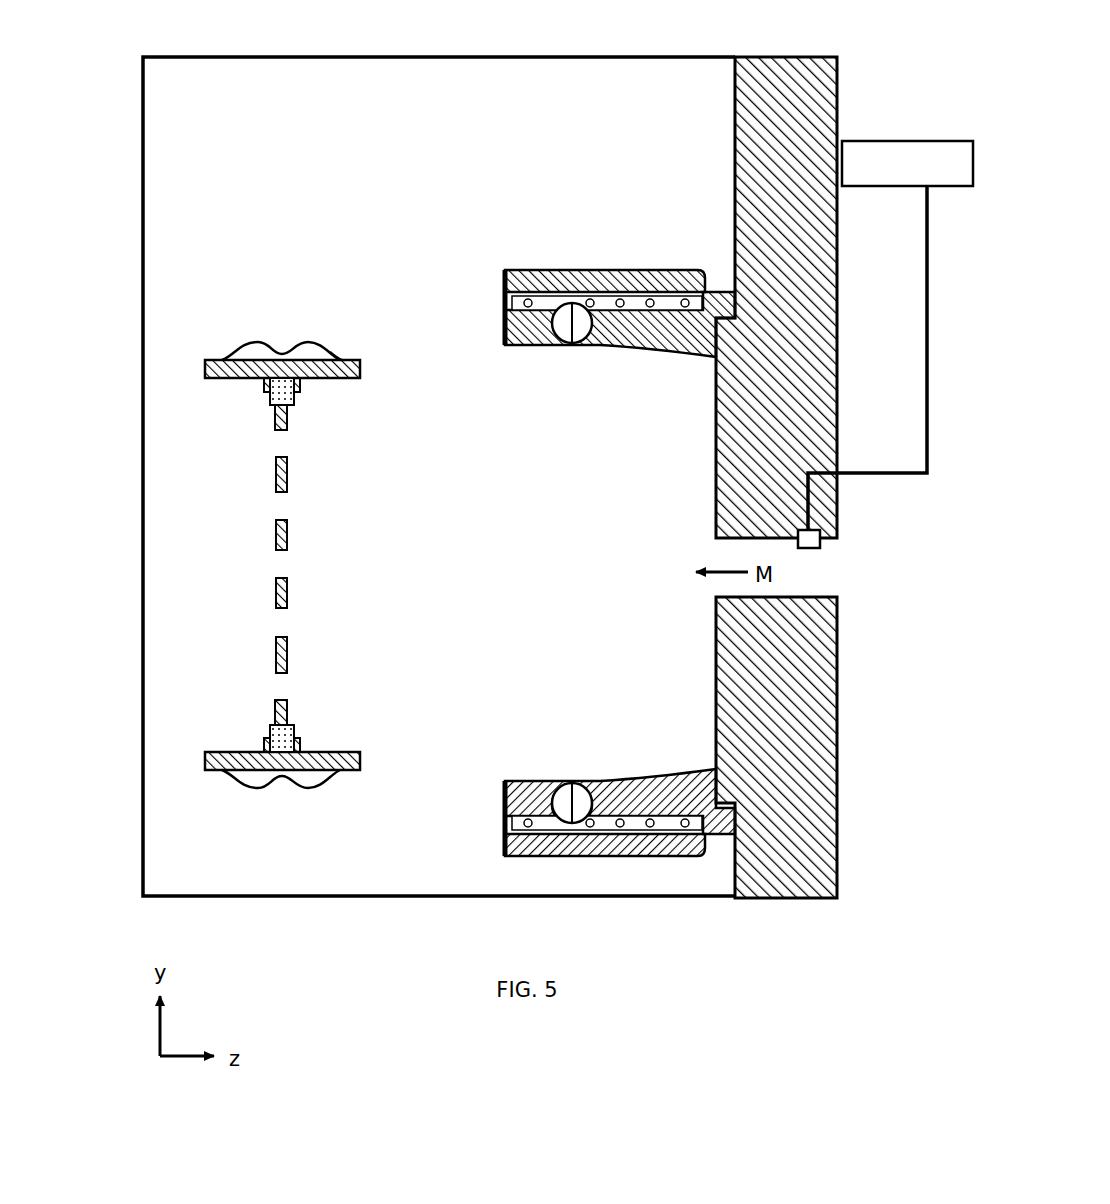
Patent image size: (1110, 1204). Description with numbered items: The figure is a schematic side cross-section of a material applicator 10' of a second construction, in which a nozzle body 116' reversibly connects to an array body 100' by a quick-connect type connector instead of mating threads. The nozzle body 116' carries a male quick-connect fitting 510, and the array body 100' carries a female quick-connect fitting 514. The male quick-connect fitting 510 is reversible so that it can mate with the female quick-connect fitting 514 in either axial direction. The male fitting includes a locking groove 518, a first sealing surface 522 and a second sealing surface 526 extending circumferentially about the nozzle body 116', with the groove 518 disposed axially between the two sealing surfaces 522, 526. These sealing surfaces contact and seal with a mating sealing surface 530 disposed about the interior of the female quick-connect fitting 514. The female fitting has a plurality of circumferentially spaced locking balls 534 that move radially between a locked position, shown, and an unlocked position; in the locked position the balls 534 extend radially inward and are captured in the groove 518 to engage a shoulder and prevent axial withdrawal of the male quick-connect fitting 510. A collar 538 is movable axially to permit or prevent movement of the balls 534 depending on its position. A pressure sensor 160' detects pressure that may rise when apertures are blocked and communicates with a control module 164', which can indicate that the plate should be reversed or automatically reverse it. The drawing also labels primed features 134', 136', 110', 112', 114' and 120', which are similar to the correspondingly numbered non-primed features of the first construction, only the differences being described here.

The material applicator 10' is at (439, 453).
The array body 100' is at (799, 453).
The upper housing portion 134' is at (787, 297).
The lower housing portion 136' is at (823, 744).
The control module 164' is at (909, 283).
The pressure sensor 160' is at (874, 553).
The female quick-connect fitting 514 is at (562, 482).
The collar 538 is at (505, 270).
The locking balls 534 is at (562, 345).
The mating sealing surface 530 is at (668, 776).
The male quick-connect fitting 510 is at (264, 325).
The locking groove 518 is at (242, 352).
The second sealing surface 526 is at (232, 357).
The first sealing surface 522 is at (340, 355).
The shaft stub 114' is at (185, 406).
The shaft segments 112' is at (231, 564).
The lower disc assembly 110' is at (206, 748).
The nozzle body 116' is at (207, 781).
The hub 120' is at (236, 726).